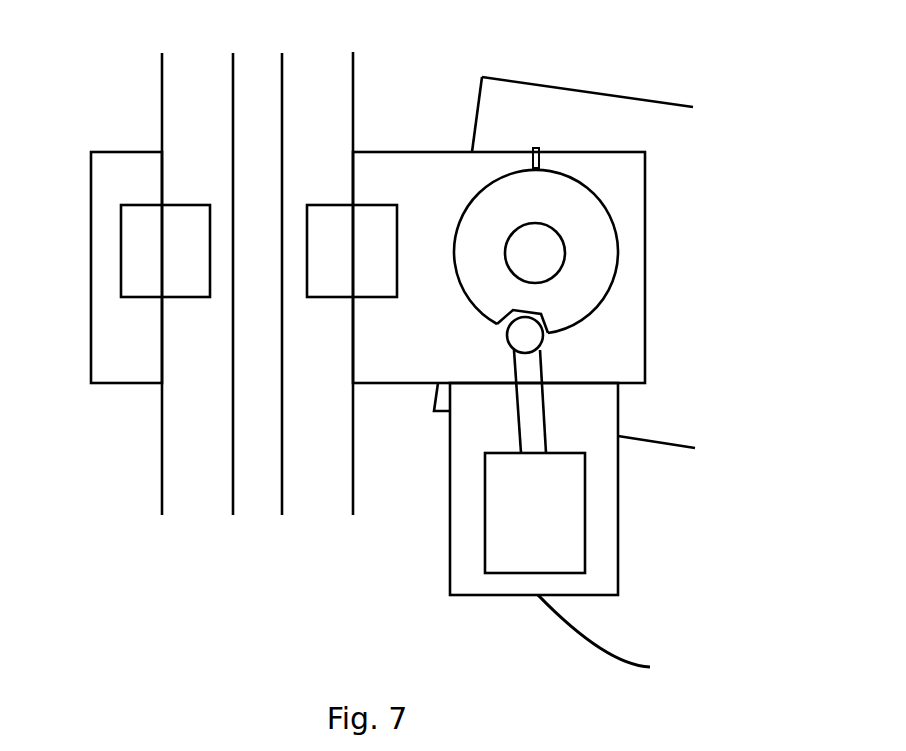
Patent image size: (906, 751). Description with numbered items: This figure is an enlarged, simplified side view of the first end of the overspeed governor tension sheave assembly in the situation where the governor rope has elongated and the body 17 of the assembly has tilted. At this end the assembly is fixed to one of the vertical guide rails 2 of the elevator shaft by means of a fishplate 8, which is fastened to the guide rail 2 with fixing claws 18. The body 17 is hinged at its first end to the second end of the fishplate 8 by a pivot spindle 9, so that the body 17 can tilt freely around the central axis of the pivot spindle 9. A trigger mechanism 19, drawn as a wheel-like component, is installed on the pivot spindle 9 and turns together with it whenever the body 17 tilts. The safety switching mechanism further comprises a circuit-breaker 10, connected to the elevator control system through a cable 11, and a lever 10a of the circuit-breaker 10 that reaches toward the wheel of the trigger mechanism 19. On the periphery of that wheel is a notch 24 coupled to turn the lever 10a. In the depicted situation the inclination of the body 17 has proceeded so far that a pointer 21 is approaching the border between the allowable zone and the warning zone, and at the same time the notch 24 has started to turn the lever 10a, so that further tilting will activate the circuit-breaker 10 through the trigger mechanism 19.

The guide rail 2 is at (347, 73).
The fishplate 8 is at (113, 158).
The pivot spindle 9 is at (519, 243).
The circuit-breaker 10 is at (573, 523).
The lever 10a is at (535, 412).
The cable 11 is at (603, 648).
The body 17 is at (534, 97).
The fixing claw 18 is at (192, 292).
The trigger mechanism 19 is at (602, 223).
The pointer 21 is at (541, 157).
The notch 24 is at (546, 323).